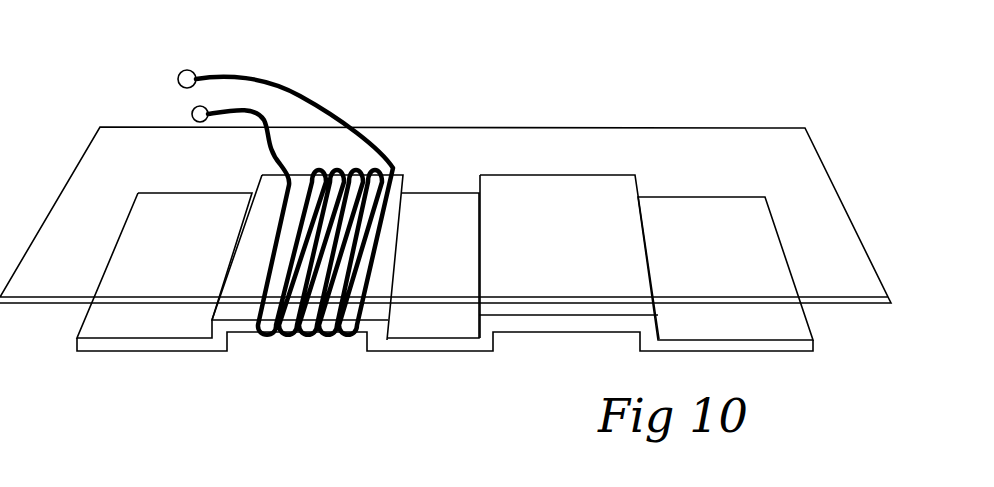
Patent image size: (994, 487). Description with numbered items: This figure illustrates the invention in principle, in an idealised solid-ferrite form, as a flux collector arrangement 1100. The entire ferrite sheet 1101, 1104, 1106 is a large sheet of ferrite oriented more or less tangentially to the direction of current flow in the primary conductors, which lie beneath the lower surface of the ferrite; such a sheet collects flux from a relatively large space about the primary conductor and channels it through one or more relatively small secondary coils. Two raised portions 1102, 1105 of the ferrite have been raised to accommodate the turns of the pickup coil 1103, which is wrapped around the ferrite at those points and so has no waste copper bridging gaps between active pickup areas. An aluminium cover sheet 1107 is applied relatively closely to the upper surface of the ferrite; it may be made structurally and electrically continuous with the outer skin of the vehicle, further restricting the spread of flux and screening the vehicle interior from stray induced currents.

The flux collector arrangement 1100 is at (887, 58).
The ferrite sheet 1101 is at (170, 352).
The raised portion 1102 is at (302, 343).
The pickup coil 1103 is at (333, 165).
The ferrite sheet 1104 is at (445, 355).
The raised portion 1105 is at (575, 334).
The ferrite sheet 1106 is at (780, 353).
The aluminium cover sheet 1107 is at (692, 123).